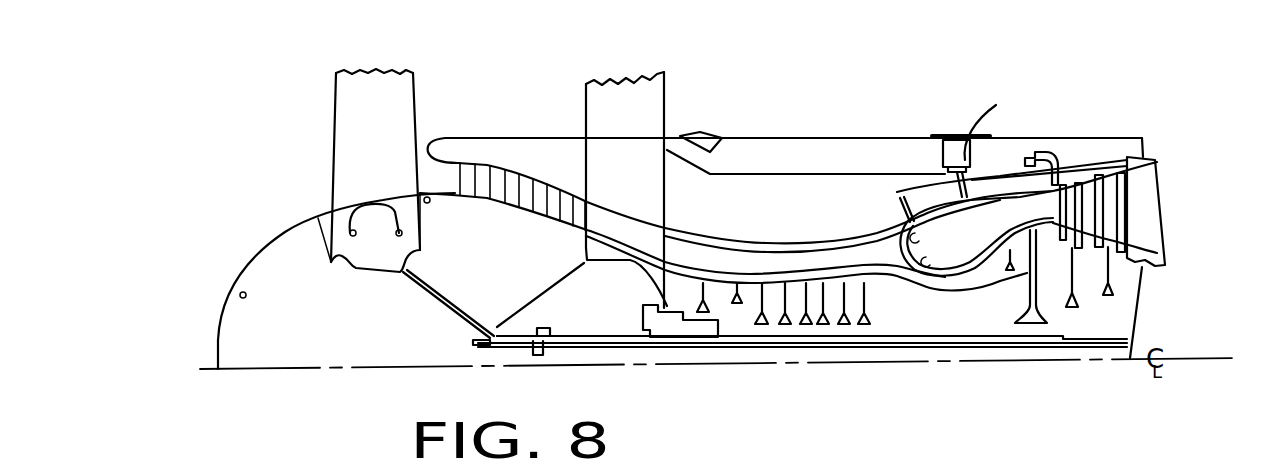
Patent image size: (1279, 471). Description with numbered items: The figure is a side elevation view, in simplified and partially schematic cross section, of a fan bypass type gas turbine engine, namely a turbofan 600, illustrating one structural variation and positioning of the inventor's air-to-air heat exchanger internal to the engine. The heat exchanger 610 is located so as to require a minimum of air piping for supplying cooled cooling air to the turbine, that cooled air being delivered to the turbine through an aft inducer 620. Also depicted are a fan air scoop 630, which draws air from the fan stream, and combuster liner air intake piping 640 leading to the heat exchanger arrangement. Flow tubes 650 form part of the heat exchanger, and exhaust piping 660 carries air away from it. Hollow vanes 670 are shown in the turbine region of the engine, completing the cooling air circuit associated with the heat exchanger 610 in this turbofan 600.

The turbofan 600 is at (1125, 108).
The heat exchanger 610 is at (928, 150).
The aft inducer 620 is at (1010, 283).
The fan air scoop 630 is at (683, 137).
The combuster liner air intake piping 640 is at (897, 192).
The flow tubes 650 is at (957, 137).
The exhaust piping 660 is at (1045, 157).
The hollow vanes 670 is at (1053, 208).